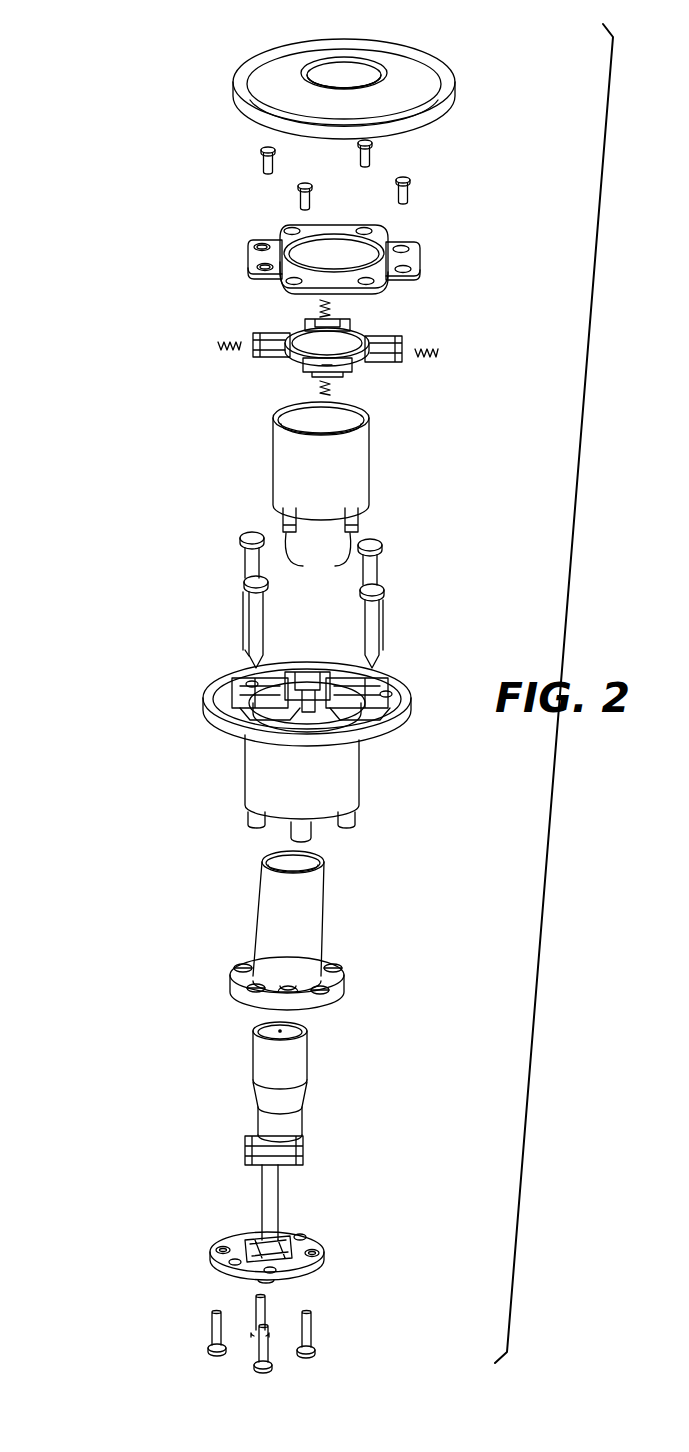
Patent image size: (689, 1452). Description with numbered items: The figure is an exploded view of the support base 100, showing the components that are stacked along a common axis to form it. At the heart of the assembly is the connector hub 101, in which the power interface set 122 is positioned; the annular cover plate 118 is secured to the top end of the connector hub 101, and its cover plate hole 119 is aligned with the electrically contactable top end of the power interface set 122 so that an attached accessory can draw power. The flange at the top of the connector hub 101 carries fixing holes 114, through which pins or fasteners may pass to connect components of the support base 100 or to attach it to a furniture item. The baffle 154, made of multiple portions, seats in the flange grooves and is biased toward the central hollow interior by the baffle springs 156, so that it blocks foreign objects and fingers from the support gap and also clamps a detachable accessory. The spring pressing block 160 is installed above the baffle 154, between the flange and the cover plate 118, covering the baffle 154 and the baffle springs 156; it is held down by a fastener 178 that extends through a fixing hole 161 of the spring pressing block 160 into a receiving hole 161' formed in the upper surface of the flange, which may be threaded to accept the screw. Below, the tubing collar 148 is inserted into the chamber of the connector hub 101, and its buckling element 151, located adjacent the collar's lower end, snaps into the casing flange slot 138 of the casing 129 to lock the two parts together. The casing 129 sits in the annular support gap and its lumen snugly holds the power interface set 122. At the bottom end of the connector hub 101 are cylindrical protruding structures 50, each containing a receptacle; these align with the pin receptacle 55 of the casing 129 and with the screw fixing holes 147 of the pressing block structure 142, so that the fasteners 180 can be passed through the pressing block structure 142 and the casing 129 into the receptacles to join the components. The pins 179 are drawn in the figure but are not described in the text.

The support base 100 is at (138, 152).
The cover plate 118 is at (230, 82).
The cover plate hole 119 is at (313, 60).
The fastener 178 is at (302, 197).
The fixing hole 161 is at (241, 237).
The spring pressing block 160 is at (422, 250).
The baffle 154 is at (272, 325).
The baffle spring 156 is at (318, 392).
The tubing collar 148 is at (378, 454).
The buckling element 151 is at (317, 557).
The pins 179 is at (240, 592).
The receiving hole 161' is at (323, 671).
The fixing holes 114 is at (238, 690).
The connector hub 101 is at (240, 766).
The cylindrical protruding structures 50 is at (290, 831).
The casing 129 is at (338, 905).
The pin receptacle 55 is at (243, 965).
The casing flange slot 138 is at (318, 975).
The power interface set 122 is at (248, 1052).
The screw fixing holes 147 is at (223, 1247).
The pressing block structure 142 is at (208, 1259).
The fasteners 180 is at (255, 1305).